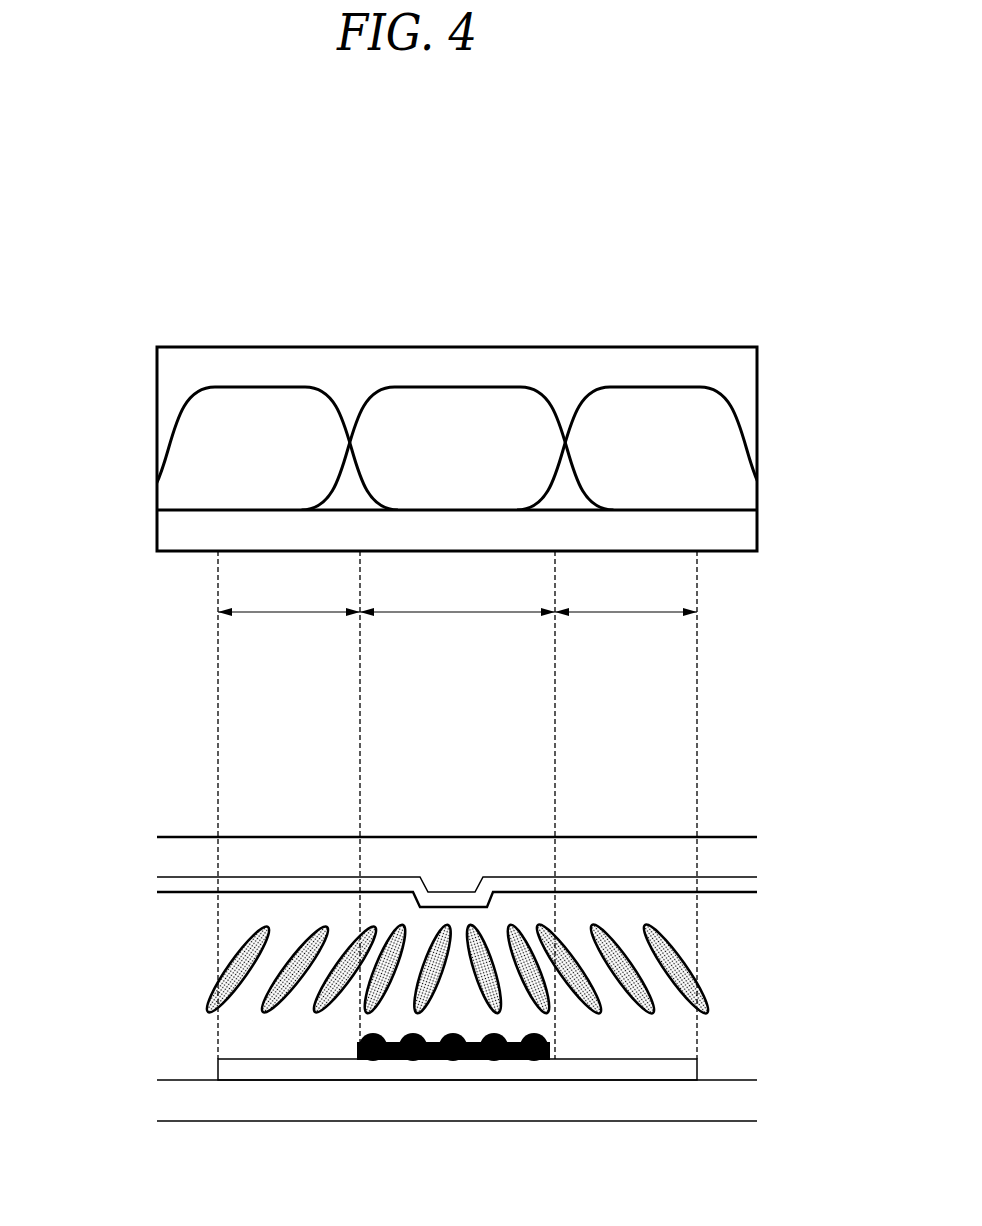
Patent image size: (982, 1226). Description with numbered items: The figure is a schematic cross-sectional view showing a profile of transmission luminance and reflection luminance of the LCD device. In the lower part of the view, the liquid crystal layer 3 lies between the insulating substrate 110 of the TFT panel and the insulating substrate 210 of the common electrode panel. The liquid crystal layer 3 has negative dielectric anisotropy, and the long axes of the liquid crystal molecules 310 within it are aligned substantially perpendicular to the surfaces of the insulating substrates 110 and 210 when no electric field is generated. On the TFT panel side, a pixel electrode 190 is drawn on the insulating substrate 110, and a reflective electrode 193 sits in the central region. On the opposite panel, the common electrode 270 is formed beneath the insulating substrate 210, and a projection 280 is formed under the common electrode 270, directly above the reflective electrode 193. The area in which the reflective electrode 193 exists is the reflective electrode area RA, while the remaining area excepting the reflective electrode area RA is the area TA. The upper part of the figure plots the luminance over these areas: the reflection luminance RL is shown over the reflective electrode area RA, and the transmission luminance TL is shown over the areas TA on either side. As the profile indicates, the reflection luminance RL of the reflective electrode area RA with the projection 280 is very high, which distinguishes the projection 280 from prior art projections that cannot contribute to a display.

The liquid crystal layer 3 is at (134, 1002).
The insulating substrate 110 is at (598, 1106).
The pixel electrode 190 is at (323, 1071).
The reflective electrode 193 is at (450, 1060).
The insulating substrate 210 is at (285, 860).
The common electrode 270 is at (621, 881).
The projection 280 is at (452, 882).
The liquid crystal molecules 310 is at (682, 973).
The transmission luminance TL is at (457, 448).
The reflection luminance RL is at (458, 448).
The remaining area TA is at (457, 596).
The reflective electrode area RA is at (457, 596).